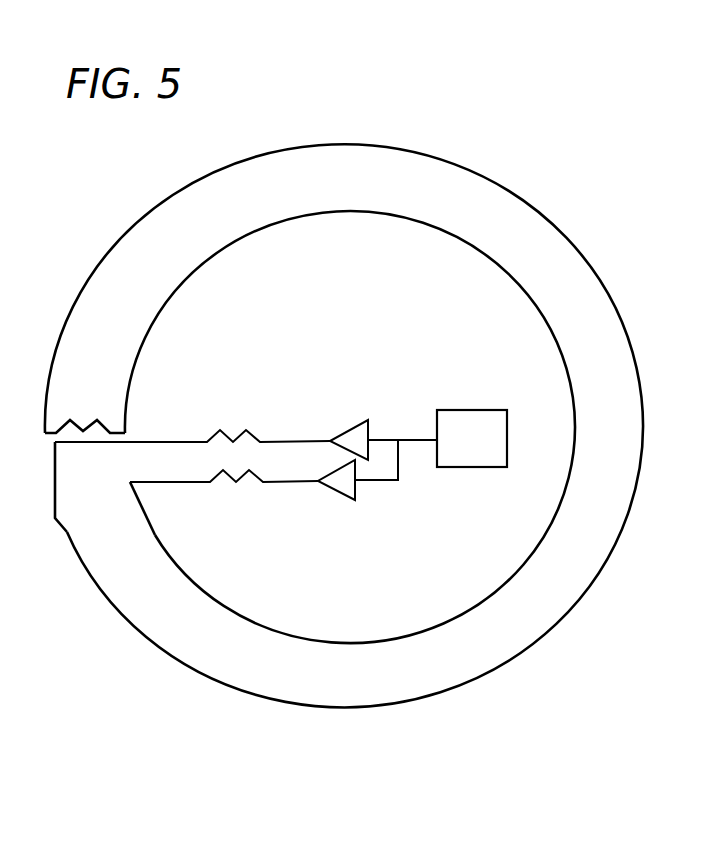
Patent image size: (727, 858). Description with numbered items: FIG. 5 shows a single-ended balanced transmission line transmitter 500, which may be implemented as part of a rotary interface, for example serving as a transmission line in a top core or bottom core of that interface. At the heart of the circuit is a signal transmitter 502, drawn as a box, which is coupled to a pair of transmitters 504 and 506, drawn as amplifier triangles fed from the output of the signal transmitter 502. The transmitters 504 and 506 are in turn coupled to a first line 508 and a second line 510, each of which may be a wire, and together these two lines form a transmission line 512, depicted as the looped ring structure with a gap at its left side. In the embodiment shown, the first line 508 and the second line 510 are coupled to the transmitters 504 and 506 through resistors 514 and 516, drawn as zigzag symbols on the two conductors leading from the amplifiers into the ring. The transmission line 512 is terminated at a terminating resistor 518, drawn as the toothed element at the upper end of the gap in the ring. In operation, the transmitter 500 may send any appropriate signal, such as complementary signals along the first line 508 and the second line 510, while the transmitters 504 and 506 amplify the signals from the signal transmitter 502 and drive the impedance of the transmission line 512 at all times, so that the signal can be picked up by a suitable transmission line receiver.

The single-ended balanced transmission line transmitter 500 is at (520, 141).
The signal transmitter 502 is at (472, 438).
The transmitter 504 is at (338, 500).
The transmitter 506 is at (357, 419).
The first line 508 is at (338, 709).
The second line 510 is at (420, 630).
The transmission line 512 is at (148, 640).
The resistor 514 is at (232, 428).
The resistor 516 is at (248, 486).
The terminating resistor 518 is at (83, 423).